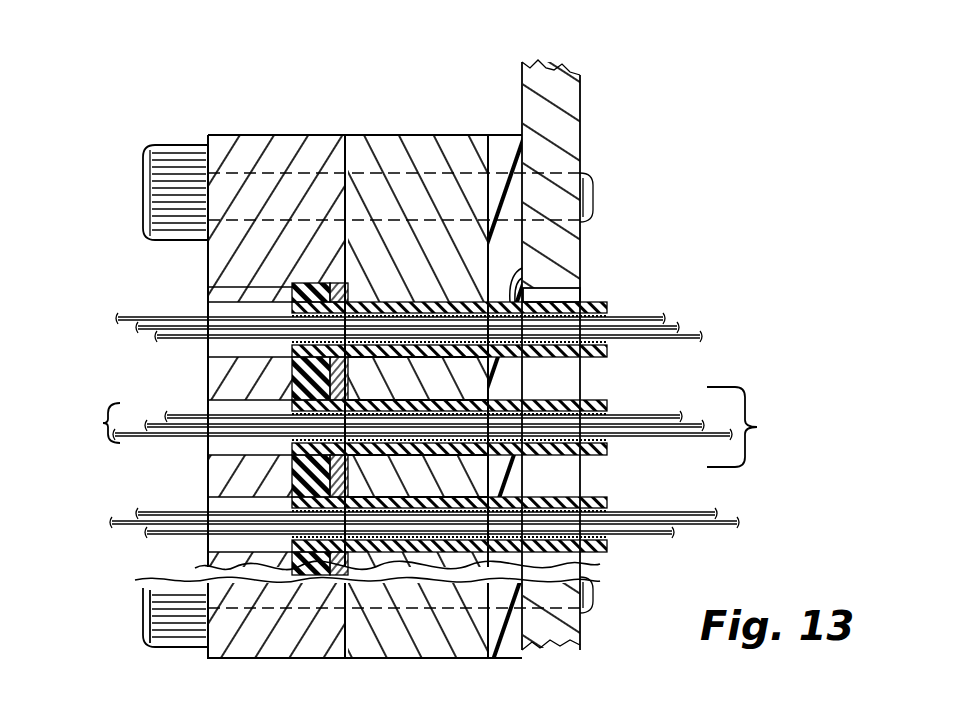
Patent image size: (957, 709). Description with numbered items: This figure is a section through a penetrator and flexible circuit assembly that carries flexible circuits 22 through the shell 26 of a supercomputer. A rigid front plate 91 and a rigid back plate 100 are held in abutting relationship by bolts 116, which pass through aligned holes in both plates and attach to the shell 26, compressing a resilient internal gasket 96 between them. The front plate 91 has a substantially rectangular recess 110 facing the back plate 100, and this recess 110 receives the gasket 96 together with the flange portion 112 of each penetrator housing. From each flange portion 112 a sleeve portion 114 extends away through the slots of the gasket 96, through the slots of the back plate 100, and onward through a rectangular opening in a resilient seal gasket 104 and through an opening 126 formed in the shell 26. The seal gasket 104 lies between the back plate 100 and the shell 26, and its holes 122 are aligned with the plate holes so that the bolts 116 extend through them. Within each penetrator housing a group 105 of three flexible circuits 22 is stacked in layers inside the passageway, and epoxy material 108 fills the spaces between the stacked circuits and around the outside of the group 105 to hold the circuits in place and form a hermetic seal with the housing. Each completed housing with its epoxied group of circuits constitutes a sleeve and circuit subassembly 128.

The flexible circuit 22 is at (642, 330).
The shell 26 is at (570, 117).
The front plate 91 is at (262, 150).
The internal gasket 96 is at (200, 561).
The back plate 100 is at (410, 140).
The seal gasket 104 is at (512, 132).
The group of flexible circuits 105 is at (391, 423).
The epoxy material 108 is at (210, 503).
The recess 110 is at (290, 284).
The flange portion 112 is at (317, 283).
The sleeve portion 114 is at (402, 300).
The bolt 116 is at (318, 0).
The hole 122 is at (527, 265).
The opening 126 is at (583, 296).
The sleeve and circuit subassembly 128 is at (552, 427).